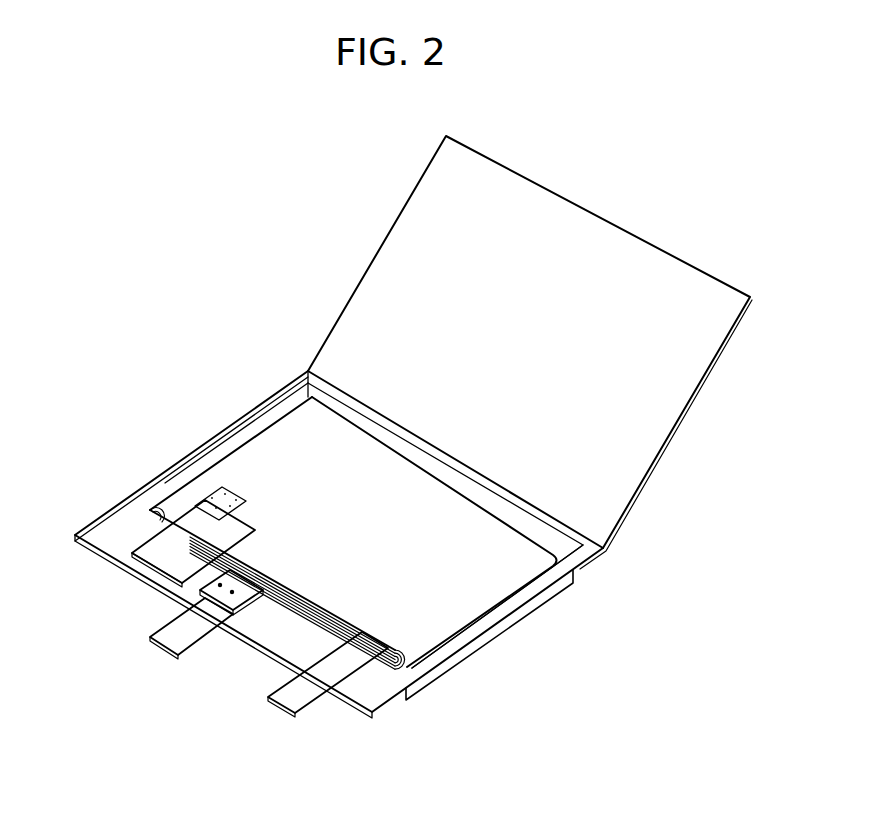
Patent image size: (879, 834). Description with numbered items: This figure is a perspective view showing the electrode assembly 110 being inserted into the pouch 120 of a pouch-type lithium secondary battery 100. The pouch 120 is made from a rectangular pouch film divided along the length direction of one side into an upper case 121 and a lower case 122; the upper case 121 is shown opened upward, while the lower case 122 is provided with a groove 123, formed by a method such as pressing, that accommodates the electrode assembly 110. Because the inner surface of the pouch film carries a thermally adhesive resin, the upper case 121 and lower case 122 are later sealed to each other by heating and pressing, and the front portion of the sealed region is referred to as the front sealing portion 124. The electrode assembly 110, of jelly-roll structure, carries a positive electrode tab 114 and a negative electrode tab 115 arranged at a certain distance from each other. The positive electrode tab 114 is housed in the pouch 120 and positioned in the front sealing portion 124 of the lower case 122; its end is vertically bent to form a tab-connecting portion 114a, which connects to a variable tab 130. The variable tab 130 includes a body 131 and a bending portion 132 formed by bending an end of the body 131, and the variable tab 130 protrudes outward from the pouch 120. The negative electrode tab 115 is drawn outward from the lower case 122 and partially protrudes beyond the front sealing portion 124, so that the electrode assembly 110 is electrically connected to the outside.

The pouch-type lithium secondary battery 100 is at (279, 252).
The electrode assembly 110 is at (241, 441).
The positive electrode tab 114 is at (150, 532).
The tab-connecting portion 114a is at (163, 562).
The negative electrode tab 115 is at (305, 693).
The pouch 120 is at (700, 578).
The upper case 121 is at (608, 505).
The lower case 122 is at (507, 627).
The groove 123 is at (512, 580).
The front sealing portion 124 is at (282, 635).
The variable tab 130 is at (80, 692).
The body 131 is at (175, 637).
The bending portion 132 is at (207, 583).